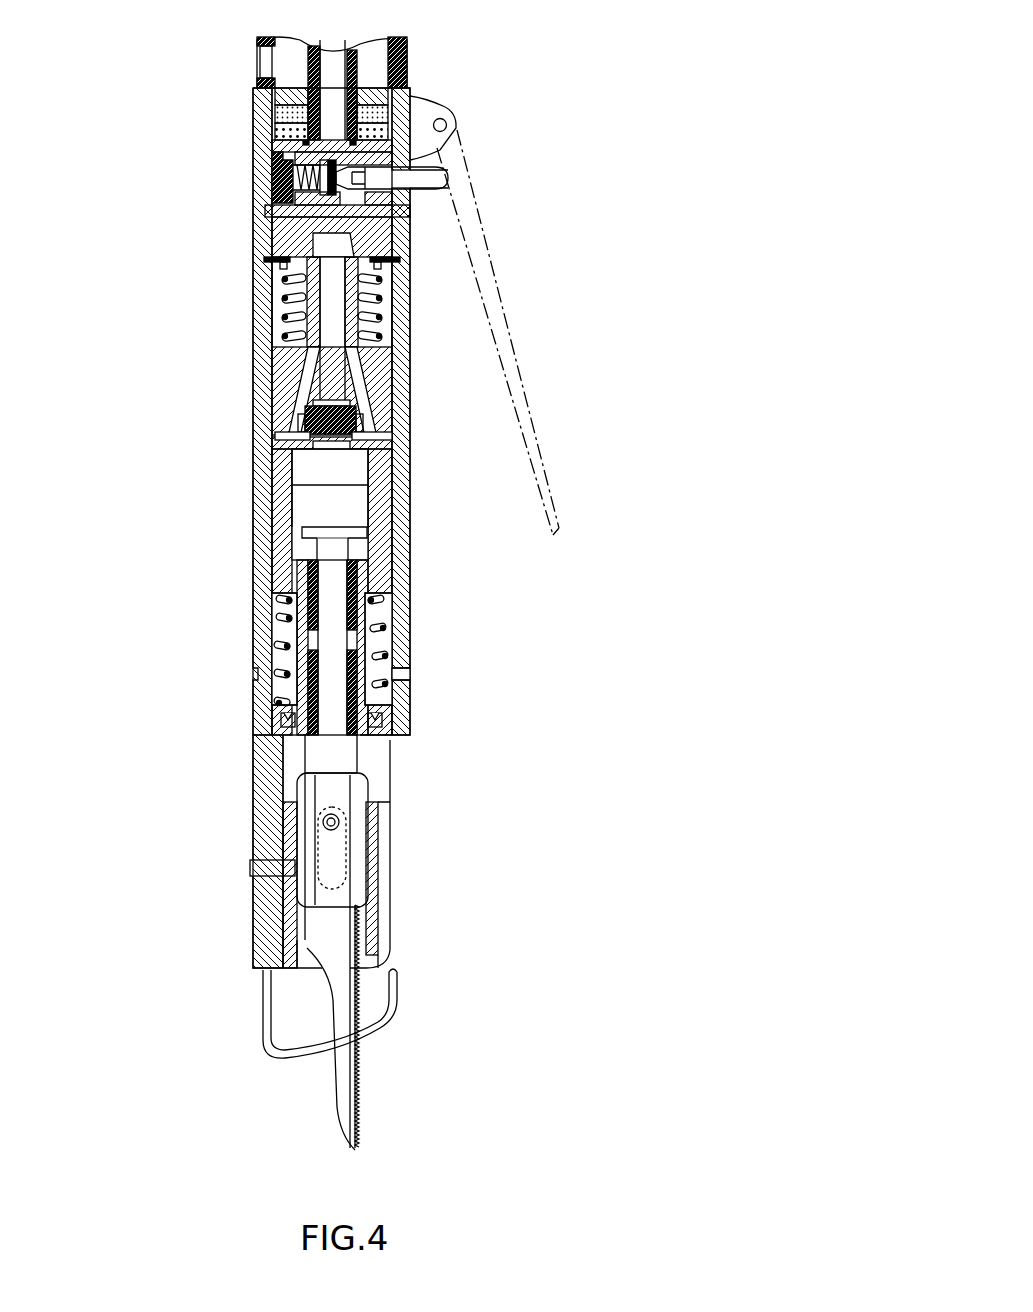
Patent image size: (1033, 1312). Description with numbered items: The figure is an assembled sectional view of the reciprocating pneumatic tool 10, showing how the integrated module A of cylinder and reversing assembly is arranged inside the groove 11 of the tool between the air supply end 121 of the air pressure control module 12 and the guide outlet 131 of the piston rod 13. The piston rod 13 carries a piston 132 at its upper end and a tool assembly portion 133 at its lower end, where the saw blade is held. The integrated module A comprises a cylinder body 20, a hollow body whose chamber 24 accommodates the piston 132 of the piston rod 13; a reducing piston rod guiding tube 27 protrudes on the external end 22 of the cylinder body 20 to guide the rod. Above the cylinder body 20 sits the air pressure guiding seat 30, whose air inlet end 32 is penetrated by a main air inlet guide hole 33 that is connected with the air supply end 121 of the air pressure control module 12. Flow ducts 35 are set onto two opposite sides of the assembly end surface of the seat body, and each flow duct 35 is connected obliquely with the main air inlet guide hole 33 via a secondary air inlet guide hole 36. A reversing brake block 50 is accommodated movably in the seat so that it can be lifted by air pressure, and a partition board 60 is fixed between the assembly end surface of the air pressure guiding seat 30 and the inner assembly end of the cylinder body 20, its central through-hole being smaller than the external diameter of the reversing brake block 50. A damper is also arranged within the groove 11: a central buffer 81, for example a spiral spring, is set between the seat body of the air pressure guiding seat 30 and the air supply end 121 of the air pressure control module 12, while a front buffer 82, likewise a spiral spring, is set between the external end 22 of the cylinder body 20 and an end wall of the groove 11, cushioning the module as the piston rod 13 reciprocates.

The reciprocating pneumatic tool 10 is at (612, 106).
The groove 11 is at (268, 318).
The air pressure control module 12 is at (270, 213).
The air supply end 121 is at (398, 283).
The piston rod 13 is at (531, 612).
The guide outlet 131 is at (360, 733).
The piston 132 is at (360, 512).
The tool assembly portion 133 is at (330, 735).
The cylinder body 20 is at (272, 490).
The external end 22 is at (272, 600).
The chamber 24 is at (360, 470).
The reducing piston rod guiding tube 27 is at (272, 625).
The air pressure guiding seat 30 is at (272, 367).
The air inlet end 32 is at (388, 328).
The main air inlet guide hole 33 is at (330, 296).
The flow duct 35 is at (380, 446).
The secondary air inlet guide hole 36 is at (378, 402).
The reversing brake block 50 is at (305, 413).
The partition board 60 is at (278, 440).
The central buffer 81 is at (268, 262).
The front buffer 82 is at (292, 648).
The integrated module of cylinder and reversing assembly A is at (108, 333).